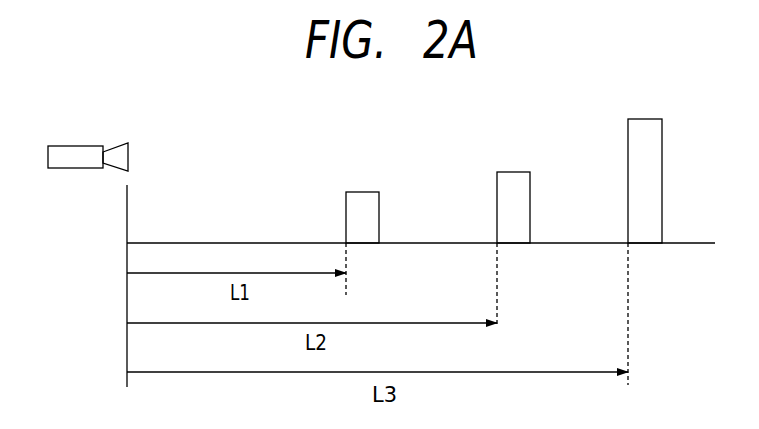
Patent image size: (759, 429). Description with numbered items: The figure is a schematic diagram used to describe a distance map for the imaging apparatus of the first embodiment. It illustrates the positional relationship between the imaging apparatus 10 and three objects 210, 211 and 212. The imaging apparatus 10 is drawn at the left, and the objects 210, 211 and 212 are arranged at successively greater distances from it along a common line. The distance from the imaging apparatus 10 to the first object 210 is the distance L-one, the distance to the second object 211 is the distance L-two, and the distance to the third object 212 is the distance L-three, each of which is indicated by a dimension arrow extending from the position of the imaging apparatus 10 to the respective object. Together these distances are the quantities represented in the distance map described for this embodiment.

The imaging apparatus 10 is at (80, 143).
The object 210 is at (363, 191).
The object 211 is at (514, 170).
The object 212 is at (645, 117).